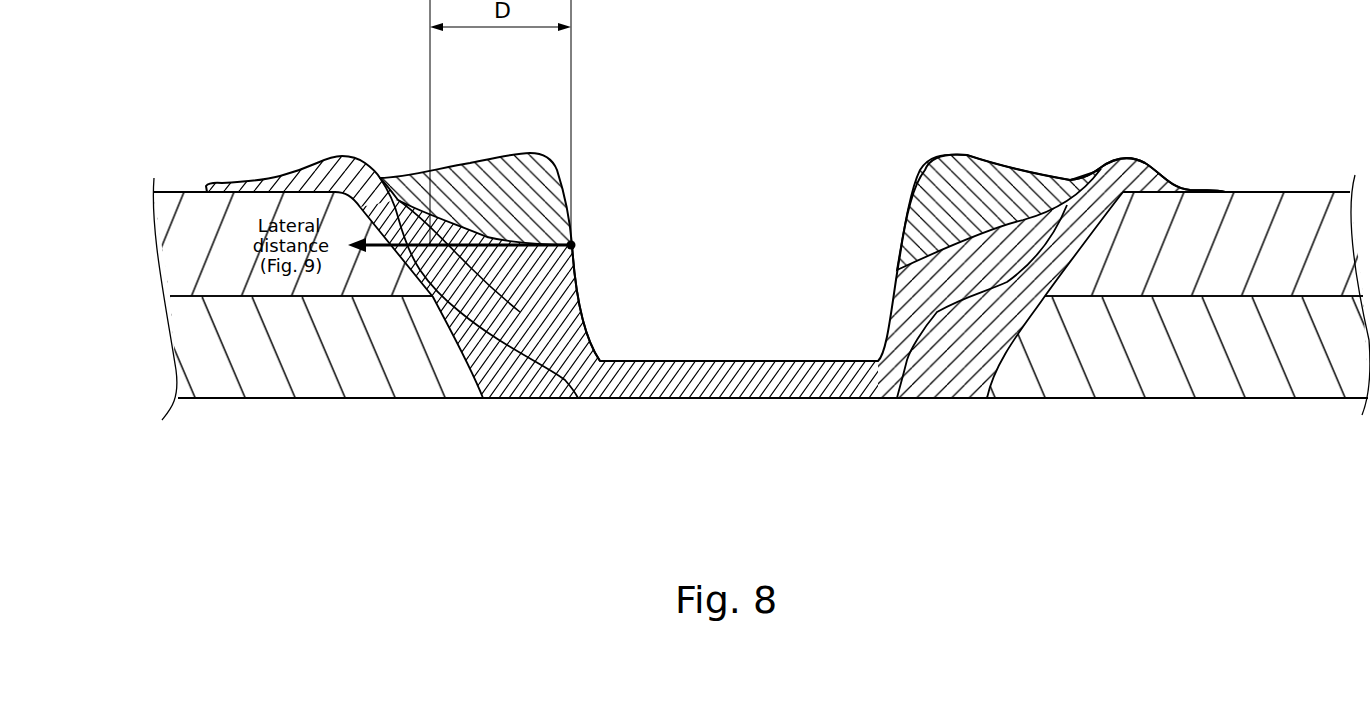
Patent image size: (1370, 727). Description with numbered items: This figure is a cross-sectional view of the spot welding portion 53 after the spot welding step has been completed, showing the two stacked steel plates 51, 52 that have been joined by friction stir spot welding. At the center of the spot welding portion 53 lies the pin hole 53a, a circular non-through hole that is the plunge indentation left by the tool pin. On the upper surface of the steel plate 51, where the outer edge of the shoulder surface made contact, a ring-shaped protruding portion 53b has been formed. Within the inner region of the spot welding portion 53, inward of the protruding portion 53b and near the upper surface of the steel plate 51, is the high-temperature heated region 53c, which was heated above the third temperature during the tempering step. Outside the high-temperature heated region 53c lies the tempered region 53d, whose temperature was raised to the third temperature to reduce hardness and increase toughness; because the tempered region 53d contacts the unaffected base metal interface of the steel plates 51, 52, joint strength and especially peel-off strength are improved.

The steel plate 51 is at (165, 240).
The steel plate 52 is at (193, 345).
The spot welding portion 53 is at (713, 383).
The pin hole 53a is at (650, 332).
The protruding portion 53b is at (1138, 157).
The high-temperature heated region 53c is at (947, 156).
The tempered region 53d is at (525, 320).